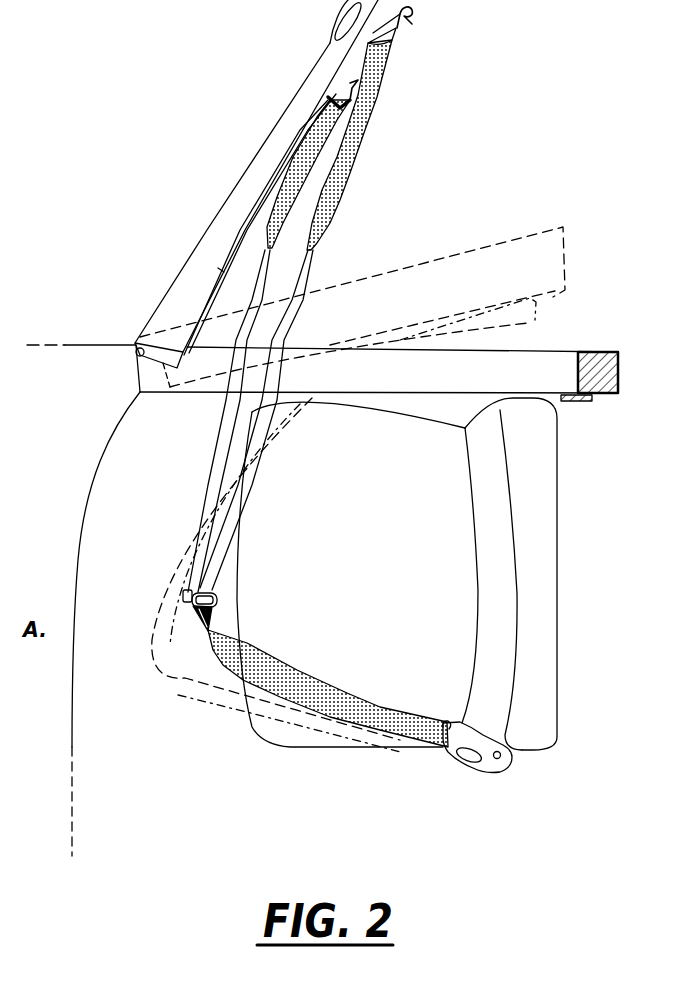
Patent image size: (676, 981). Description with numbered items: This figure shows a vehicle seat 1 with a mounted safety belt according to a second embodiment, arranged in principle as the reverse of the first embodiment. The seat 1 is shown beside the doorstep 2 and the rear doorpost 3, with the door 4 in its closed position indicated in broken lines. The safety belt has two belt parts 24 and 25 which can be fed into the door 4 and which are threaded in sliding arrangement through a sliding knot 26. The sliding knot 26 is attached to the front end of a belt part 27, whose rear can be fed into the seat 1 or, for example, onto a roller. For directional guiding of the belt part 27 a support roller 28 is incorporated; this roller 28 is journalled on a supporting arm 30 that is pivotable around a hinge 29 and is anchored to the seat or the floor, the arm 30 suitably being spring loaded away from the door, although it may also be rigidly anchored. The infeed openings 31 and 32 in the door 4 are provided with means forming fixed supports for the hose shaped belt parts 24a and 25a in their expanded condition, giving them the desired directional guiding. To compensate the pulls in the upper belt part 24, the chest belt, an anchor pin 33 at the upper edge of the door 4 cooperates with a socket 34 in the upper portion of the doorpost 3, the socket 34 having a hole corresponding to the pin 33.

The seat 1 is at (428, 571).
The doorstep 2 is at (515, 368).
The rear doorpost 3 is at (585, 366).
The door 4 is at (245, 200).
The upper belt part 24 is at (317, 273).
The hose shaped belt part 24a is at (348, 177).
The belt part 25 is at (180, 268).
The hose shaped belt part 25a is at (293, 205).
The sliding knot 26 is at (186, 596).
The belt part 27 is at (330, 710).
The support roller 28 is at (445, 731).
The hinge 29 is at (500, 757).
The supporting arm 30 is at (487, 767).
The infeed opening 31 is at (398, 40).
The infeed opening 32 is at (342, 91).
The anchor pin 33 is at (416, 18).
The socket 34 is at (583, 400).